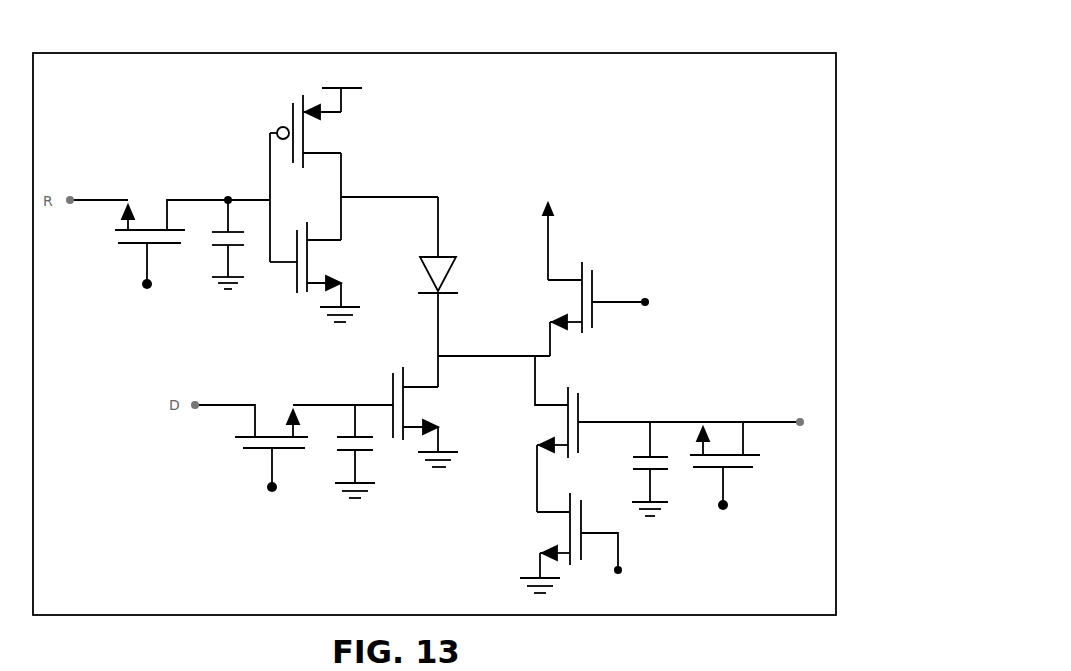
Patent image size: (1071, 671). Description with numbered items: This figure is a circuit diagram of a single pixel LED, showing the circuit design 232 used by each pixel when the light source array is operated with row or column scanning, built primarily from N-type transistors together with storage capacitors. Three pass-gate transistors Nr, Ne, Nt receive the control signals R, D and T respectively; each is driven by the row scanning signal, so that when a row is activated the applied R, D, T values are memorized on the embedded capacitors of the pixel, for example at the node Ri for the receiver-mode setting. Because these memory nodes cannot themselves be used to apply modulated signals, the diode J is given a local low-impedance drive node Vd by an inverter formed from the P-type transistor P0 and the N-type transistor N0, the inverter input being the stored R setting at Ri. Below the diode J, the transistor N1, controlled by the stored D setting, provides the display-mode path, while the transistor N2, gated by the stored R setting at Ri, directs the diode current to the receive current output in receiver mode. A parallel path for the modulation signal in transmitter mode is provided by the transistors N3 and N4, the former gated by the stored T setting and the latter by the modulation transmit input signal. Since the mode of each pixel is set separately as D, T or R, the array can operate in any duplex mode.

The circuit design 232 is at (662, 53).
The pass-gate transistor for R control signal Nr is at (192, 244).
The receive control node Ri is at (228, 232).
The inverter P-type transistor P0 is at (316, 118).
The inverter N-type transistor N0 is at (316, 272).
The diode drive node Vd is at (389, 187).
The diode J is at (443, 292).
The pass-gate transistor for D control signal N1 is at (430, 417).
The receive output transistor N2 is at (593, 261).
The modulation path transistor N3 is at (668, 434).
The modulation path transistor N4 is at (631, 554).
The pass-gate transistor for D control signal Ne is at (314, 452).
The pass-gate transistor for T control signal Nt is at (725, 470).